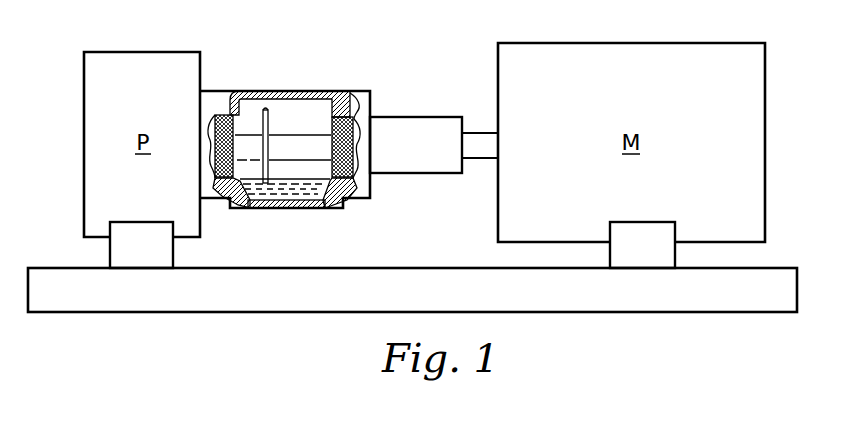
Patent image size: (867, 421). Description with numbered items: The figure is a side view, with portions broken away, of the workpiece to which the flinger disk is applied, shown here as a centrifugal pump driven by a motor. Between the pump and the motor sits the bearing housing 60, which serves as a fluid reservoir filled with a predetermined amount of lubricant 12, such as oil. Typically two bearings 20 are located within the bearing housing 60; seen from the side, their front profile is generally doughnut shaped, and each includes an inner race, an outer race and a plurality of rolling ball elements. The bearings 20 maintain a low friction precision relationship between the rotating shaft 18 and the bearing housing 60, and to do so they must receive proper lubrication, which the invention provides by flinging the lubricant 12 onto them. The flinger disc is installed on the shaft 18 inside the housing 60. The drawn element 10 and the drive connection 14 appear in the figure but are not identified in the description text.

The shaft 10 is at (260, 108).
The housing bottom wall 12 is at (290, 210).
The drive shaft 14 is at (480, 140).
The fluid reservoir 18 is at (318, 210).
The seal rings 20 is at (222, 116).
The housing cover 60 is at (302, 108).